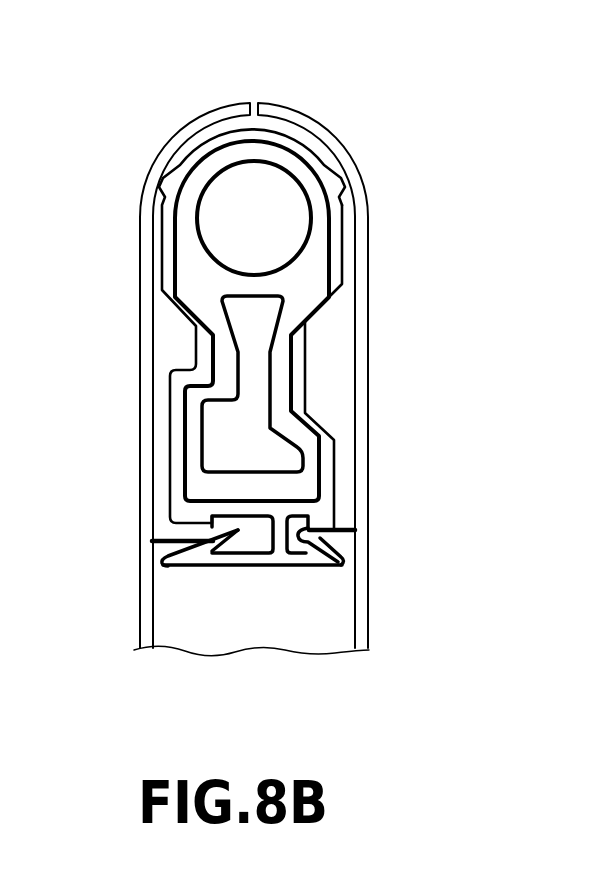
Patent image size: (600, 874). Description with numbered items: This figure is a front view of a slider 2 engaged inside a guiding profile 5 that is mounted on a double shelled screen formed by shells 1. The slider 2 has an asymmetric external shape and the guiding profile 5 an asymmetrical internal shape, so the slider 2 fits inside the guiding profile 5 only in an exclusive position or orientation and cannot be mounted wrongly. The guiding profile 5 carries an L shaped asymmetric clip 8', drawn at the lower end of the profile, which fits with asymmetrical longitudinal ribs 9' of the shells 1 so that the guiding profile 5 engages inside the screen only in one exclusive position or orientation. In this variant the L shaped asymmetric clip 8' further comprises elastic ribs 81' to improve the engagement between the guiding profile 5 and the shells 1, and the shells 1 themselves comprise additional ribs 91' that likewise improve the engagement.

The shells 1 is at (335, 148).
The slider 2 is at (322, 220).
The guiding profile 5 is at (330, 312).
The asymmetrical longitudinal ribs 9' is at (254, 500).
The L shaped asymmetric clip 8' is at (252, 622).
The elastic ribs 81' is at (308, 629).
The ribs 91' is at (271, 628).